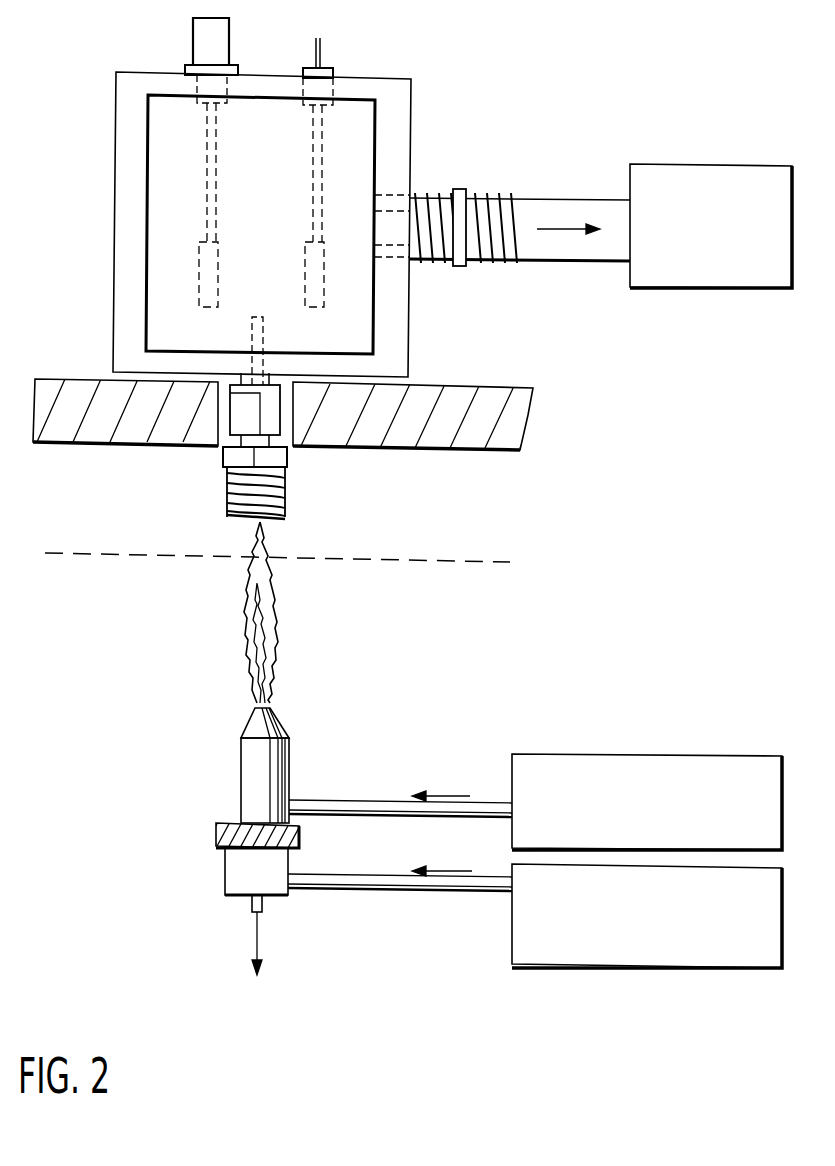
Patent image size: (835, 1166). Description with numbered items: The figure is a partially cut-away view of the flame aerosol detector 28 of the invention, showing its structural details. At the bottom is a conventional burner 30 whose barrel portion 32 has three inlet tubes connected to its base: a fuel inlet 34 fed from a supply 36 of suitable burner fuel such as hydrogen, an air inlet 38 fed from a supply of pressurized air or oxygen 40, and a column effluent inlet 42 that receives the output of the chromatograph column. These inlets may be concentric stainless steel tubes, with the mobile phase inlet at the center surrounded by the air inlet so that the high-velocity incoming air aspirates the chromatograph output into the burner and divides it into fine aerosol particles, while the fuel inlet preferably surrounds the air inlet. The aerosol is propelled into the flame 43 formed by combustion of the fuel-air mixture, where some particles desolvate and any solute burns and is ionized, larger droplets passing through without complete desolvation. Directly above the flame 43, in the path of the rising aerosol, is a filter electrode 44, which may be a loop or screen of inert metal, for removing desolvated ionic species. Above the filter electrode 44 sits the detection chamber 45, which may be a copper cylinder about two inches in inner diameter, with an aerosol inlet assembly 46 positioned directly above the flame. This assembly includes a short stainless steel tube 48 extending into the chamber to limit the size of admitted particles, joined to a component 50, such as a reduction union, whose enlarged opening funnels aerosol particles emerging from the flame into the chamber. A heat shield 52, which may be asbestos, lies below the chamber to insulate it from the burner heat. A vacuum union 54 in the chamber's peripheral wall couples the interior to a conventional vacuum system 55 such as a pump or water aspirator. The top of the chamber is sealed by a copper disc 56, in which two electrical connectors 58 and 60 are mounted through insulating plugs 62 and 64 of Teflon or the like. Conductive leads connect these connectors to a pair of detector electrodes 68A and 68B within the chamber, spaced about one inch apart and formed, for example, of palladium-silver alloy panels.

The detector 28 is at (538, 90).
The burner 30 is at (325, 746).
The barrel portion 32 is at (245, 770).
The fuel inlet 34 is at (387, 806).
The fuel supply 36 is at (512, 760).
The air inlet 38 is at (378, 865).
The supply of pressurized air or oxygen 40 is at (512, 866).
The column effluent inlet 42 is at (248, 903).
The flame 43 is at (300, 640).
The filter electrode 44 is at (385, 558).
The detection chamber 45 is at (130, 152).
The aerosol inlet assembly 46 is at (208, 474).
The tube 48 is at (263, 337).
The component 50 is at (288, 462).
The heat shield 52 is at (460, 400).
The vacuum union 54 is at (465, 190).
The vacuum system 55 is at (630, 170).
The copper disc 56 is at (280, 88).
The electrical connector 58 is at (198, 40).
The electrical connector 60 is at (320, 53).
The insulating plug 62 is at (189, 65).
The insulating plug 64 is at (333, 72).
The detector electrode 68A is at (200, 275).
The detector electrode 68B is at (305, 277).